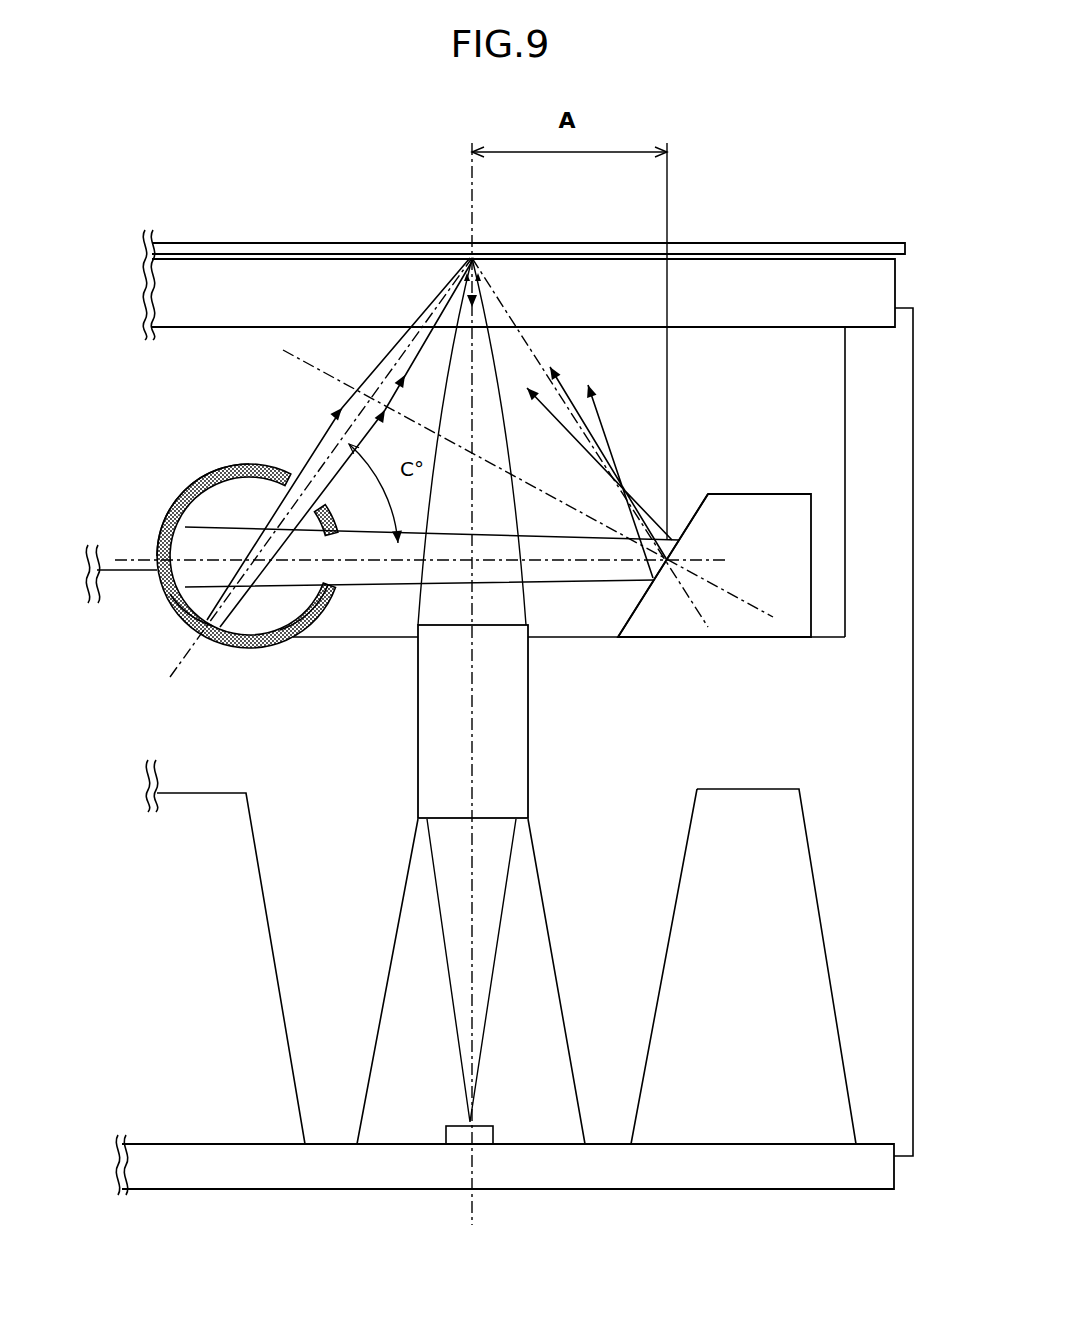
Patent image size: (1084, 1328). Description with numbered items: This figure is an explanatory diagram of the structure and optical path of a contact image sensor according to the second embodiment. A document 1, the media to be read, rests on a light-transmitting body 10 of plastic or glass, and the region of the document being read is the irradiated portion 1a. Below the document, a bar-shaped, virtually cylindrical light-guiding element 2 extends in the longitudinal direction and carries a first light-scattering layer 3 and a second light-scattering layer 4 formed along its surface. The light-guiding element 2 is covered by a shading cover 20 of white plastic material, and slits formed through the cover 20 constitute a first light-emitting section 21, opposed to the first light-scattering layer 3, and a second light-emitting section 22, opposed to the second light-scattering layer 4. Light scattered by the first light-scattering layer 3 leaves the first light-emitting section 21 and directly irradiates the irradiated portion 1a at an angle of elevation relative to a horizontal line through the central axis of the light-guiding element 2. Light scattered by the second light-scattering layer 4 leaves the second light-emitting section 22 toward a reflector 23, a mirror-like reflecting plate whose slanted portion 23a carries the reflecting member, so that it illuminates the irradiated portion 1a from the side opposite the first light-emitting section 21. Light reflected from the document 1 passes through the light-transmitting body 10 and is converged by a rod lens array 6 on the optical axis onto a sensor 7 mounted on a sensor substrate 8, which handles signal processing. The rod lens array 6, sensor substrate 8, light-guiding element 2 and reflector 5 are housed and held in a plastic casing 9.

The document 1 is at (187, 246).
The irradiated portion 1a is at (471, 258).
The light-transmitting body 10 is at (230, 275).
The light-guiding element 2 is at (205, 508).
The first light-scattering layer 3 is at (200, 628).
The second light-scattering layer 4 is at (178, 534).
The reflector 5 is at (753, 630).
The rod lens array 6 is at (530, 796).
The sensor 7 is at (500, 1144).
The sensor substrate 8 is at (404, 1192).
The casing 9 is at (250, 1112).
The shading cover 20 is at (200, 507).
The first light-emitting section 21 is at (308, 493).
The second light-emitting section 22 is at (338, 568).
The reflector 23 is at (767, 513).
The prism reflecting surface 23a is at (672, 503).